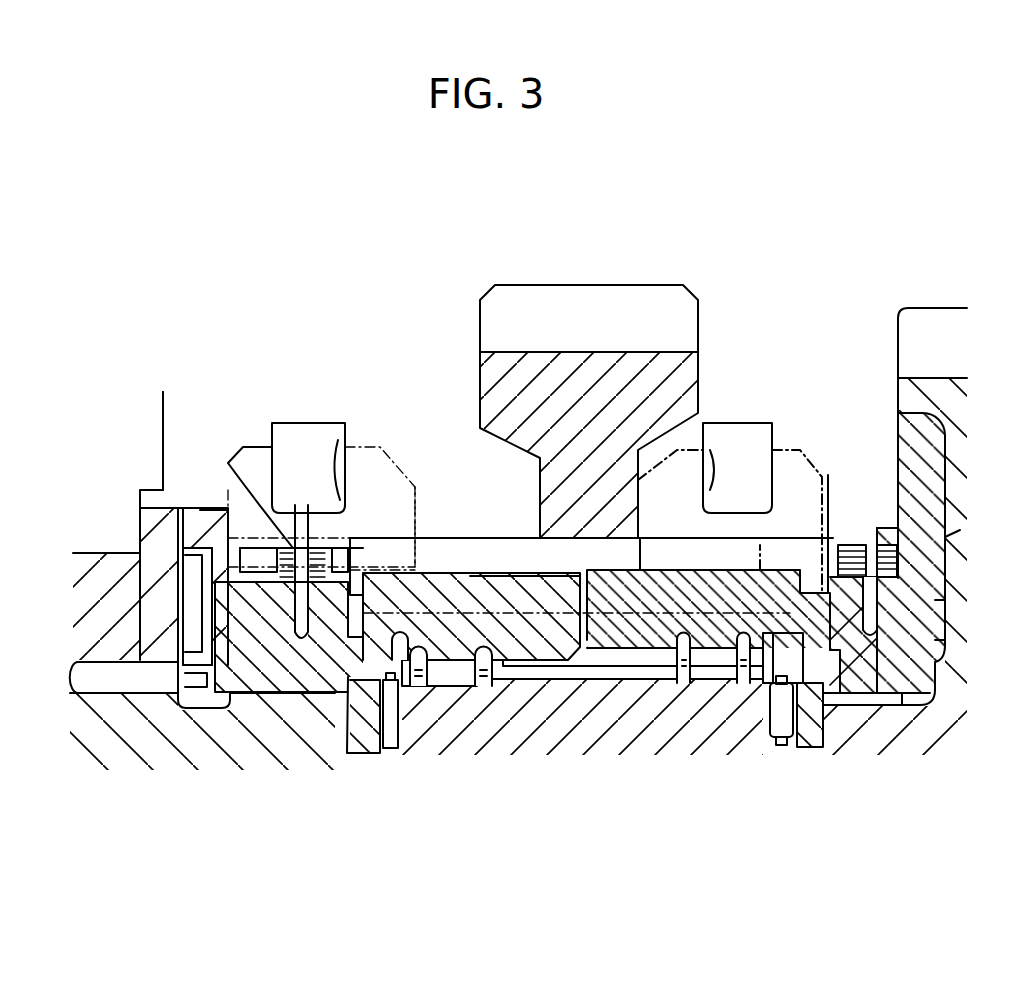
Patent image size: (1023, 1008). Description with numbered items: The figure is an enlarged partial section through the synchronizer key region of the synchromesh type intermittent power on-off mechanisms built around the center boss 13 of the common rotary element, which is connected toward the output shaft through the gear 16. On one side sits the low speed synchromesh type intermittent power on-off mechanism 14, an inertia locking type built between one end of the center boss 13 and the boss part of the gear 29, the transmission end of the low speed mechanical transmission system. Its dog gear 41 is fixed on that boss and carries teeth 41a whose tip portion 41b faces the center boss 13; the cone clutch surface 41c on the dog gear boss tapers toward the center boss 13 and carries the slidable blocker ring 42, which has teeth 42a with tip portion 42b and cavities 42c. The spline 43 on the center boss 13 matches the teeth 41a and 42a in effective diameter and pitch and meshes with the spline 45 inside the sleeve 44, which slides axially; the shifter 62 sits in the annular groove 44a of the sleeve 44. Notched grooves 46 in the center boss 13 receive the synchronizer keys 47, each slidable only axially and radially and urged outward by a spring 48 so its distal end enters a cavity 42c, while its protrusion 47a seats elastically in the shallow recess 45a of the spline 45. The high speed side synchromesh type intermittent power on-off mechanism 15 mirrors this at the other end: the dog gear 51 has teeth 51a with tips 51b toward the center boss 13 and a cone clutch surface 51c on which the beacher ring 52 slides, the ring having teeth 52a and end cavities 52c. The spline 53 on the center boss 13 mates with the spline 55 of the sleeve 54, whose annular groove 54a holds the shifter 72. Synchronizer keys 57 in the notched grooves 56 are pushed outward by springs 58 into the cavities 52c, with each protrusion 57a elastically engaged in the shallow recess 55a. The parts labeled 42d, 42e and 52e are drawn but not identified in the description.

The center boss 13 is at (588, 738).
The low speed synchromesh type intermittent power on-off mechanism 14 is at (852, 378).
The high speed side synchromesh type intermittent power on-off mechanism 15 is at (222, 340).
The gear 16 is at (582, 292).
The gear 29 is at (940, 310).
The dog gear 41 is at (945, 600).
The teeth 41a is at (950, 537).
The tip portion 41b is at (895, 530).
The cone clutch surface 41c is at (935, 698).
The blocker ring 42 is at (880, 700).
The teeth 42a is at (856, 543).
The tip portion 42b is at (835, 545).
The cavities 42c is at (798, 745).
The holder part 42d is at (838, 695).
The pin seat 42e is at (768, 685).
The spline 43 is at (812, 540).
The sleeve 44 is at (793, 448).
The annular groove 44a is at (710, 450).
The spline 45 is at (625, 566).
The shallow recess 45a is at (765, 540).
The notched grooves 46 is at (945, 625).
The synchronizer key 47 is at (672, 684).
The protrusion 47a is at (695, 558).
The spring 48 is at (728, 684).
The dog gear 51 is at (215, 640).
The teeth 51a is at (255, 545).
The tips 51b is at (228, 463).
The cone clutch surface 51c is at (262, 665).
The beacher ring 52 is at (348, 665).
The teeth 52a is at (300, 546).
The cavities 52c is at (340, 546).
The hub pin 52e is at (403, 660).
The spline 53 is at (425, 532).
The sleeve 54 is at (376, 450).
The annular groove 54a is at (336, 440).
The spline 55 is at (440, 560).
The shallow recess 55a is at (245, 620).
The notched grooves 56 is at (352, 574).
The synchronizer key 57 is at (530, 660).
The protrusion 57a is at (475, 576).
The spring 58 is at (440, 688).
The shifter 62 is at (765, 422).
The shifter 72 is at (316, 421).